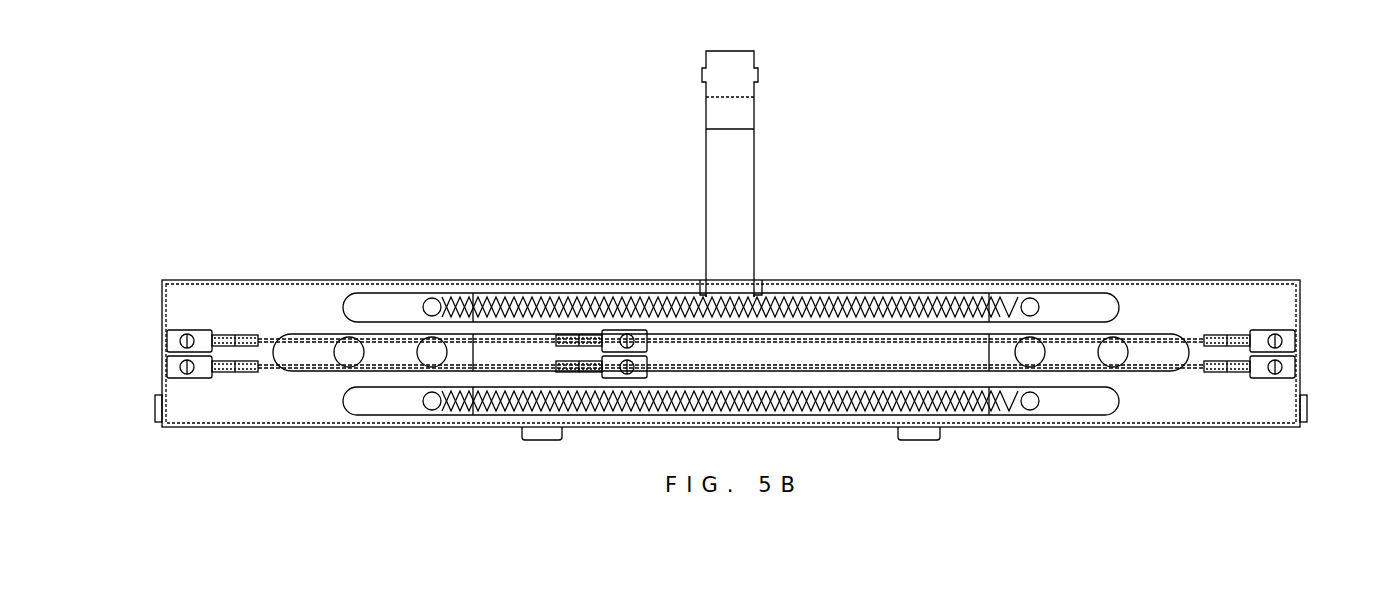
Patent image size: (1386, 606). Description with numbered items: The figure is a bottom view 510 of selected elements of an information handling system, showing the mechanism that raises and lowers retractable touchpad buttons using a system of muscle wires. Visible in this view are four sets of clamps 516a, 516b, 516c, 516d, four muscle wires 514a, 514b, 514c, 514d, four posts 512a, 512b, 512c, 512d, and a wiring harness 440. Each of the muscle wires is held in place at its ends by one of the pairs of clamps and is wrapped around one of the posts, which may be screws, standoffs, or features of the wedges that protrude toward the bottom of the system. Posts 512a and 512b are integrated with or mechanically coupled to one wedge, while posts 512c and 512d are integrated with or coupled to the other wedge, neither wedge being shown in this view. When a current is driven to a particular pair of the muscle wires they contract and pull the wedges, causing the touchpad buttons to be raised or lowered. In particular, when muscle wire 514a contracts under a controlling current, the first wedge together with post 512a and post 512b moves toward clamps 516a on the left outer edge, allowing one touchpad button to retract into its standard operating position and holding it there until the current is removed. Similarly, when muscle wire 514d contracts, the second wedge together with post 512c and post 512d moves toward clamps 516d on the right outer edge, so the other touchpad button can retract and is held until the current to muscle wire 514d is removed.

The bottom view 510 is at (1030, 84).
The wiring harness 440 is at (715, 190).
The post 512a is at (338, 350).
The post 512b is at (424, 350).
The post 512c is at (1032, 350).
The post 512d is at (1122, 350).
The muscle wire 514a is at (323, 358).
The muscle wire 514b is at (528, 336).
The muscle wire 514c is at (922, 336).
The muscle wire 514d is at (1140, 360).
The clamps 516a is at (172, 338).
The clamps 516b is at (642, 343).
The clamps 516c is at (818, 343).
The clamps 516d is at (1290, 340).